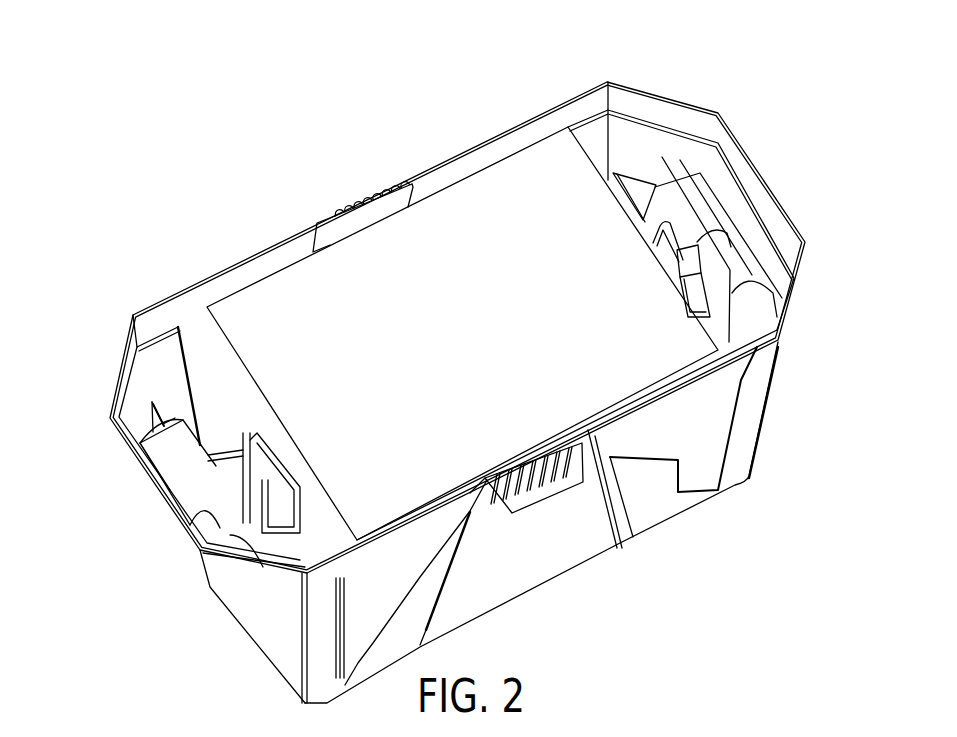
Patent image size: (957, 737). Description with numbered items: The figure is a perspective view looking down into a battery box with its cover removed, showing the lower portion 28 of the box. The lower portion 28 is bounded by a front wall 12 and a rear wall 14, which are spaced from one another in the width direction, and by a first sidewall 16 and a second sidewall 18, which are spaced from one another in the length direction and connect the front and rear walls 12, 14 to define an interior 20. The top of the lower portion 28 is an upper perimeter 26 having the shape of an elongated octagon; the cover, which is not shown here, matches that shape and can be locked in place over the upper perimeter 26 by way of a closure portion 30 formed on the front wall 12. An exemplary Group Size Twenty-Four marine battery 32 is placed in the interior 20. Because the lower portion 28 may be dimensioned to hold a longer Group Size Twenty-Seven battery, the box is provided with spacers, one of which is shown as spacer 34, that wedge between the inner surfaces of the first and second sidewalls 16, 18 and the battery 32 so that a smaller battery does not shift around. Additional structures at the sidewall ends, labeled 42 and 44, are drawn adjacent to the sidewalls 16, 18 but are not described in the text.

The front wall 12 is at (545, 560).
The rear wall 14 is at (371, 196).
The first sidewall 16 is at (163, 493).
The second sidewall 18 is at (783, 213).
The interior 20 is at (643, 164).
The upper perimeter 26 is at (743, 357).
The lower portion 28 is at (279, 637).
The closure portion 30 is at (587, 491).
The marine battery 32 is at (225, 300).
The spacer 34 is at (236, 513).
The first clamp block 42 is at (185, 468).
The second clamp block 44 is at (695, 208).